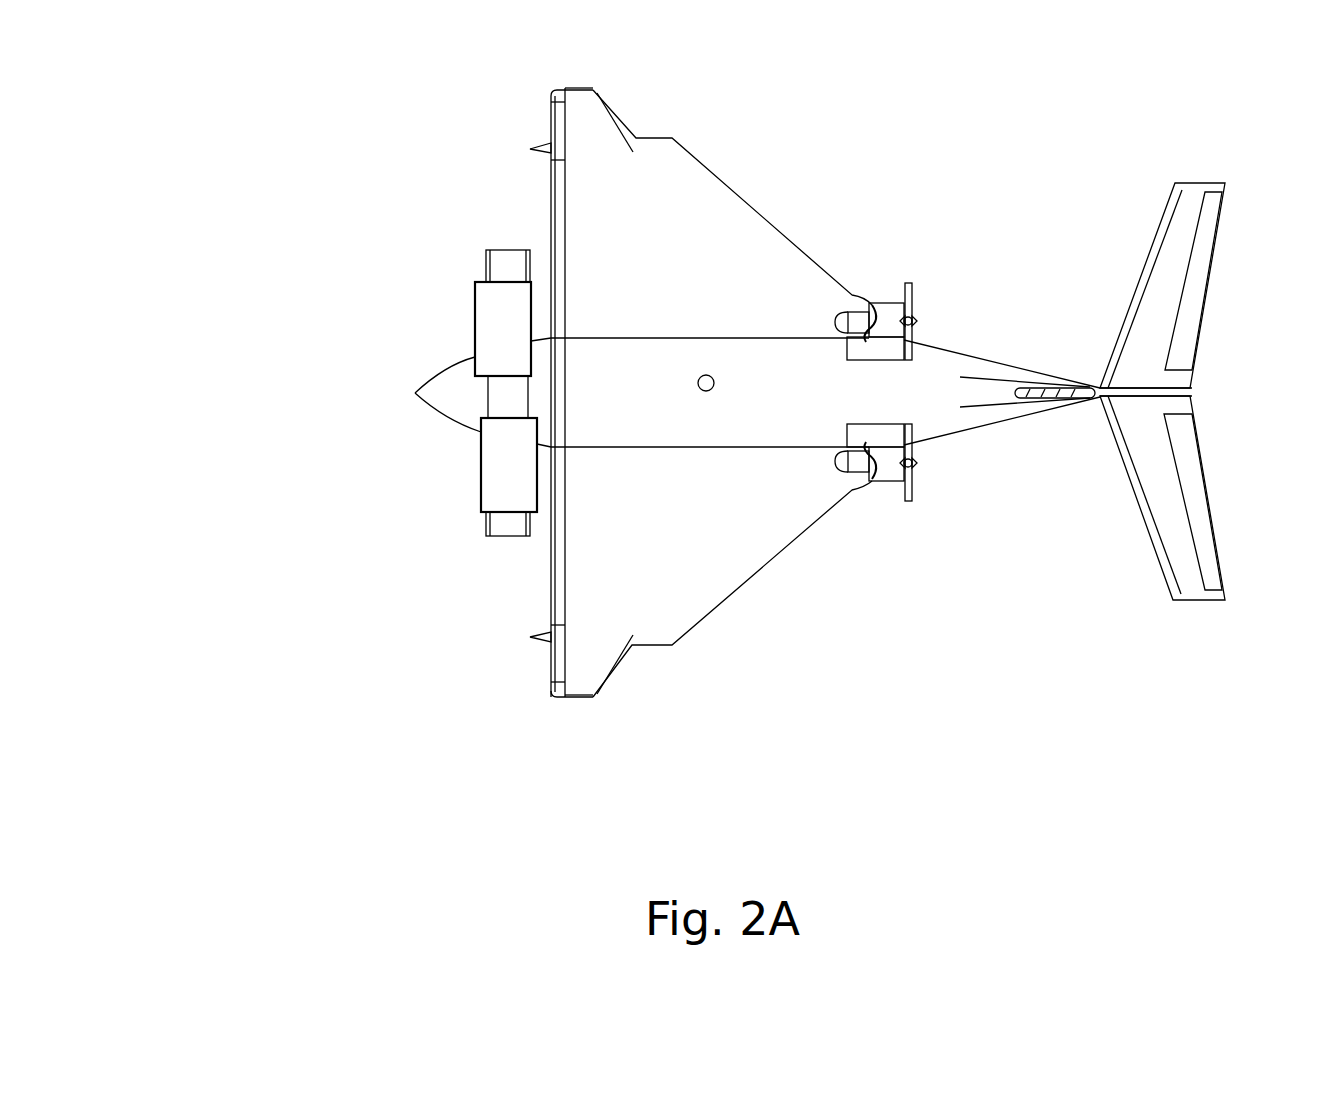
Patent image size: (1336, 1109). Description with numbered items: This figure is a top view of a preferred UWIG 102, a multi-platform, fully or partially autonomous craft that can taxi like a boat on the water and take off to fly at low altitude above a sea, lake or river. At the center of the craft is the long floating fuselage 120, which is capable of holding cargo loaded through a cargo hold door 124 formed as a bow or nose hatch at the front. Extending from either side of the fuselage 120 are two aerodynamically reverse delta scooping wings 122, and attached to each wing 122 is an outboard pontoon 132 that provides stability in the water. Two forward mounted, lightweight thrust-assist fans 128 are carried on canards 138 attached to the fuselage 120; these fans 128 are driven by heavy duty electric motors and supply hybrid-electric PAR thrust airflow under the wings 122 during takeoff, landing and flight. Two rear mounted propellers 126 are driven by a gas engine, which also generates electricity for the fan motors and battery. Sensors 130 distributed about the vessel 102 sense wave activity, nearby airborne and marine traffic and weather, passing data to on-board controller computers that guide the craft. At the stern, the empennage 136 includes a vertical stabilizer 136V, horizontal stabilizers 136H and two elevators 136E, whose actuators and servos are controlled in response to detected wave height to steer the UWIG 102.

The UWIG 102 is at (228, 130).
The floating fuselage 120 is at (1003, 362).
The aerodynamically reverse delta scooping wings 122 is at (655, 138).
The cargo hold door 124 is at (447, 415).
The rear mounted propellers 126 is at (890, 306).
The thrust-assist fans 128 is at (478, 282).
The sensors 130 is at (700, 378).
The outboard pontoons 132 is at (530, 150).
The empennage 136 is at (1088, 142).
The horizontal stabilizers 136H is at (1203, 182).
The elevators 136E is at (1207, 290).
The vertical stabilizers 136V is at (1073, 397).
The canards 138 is at (508, 250).